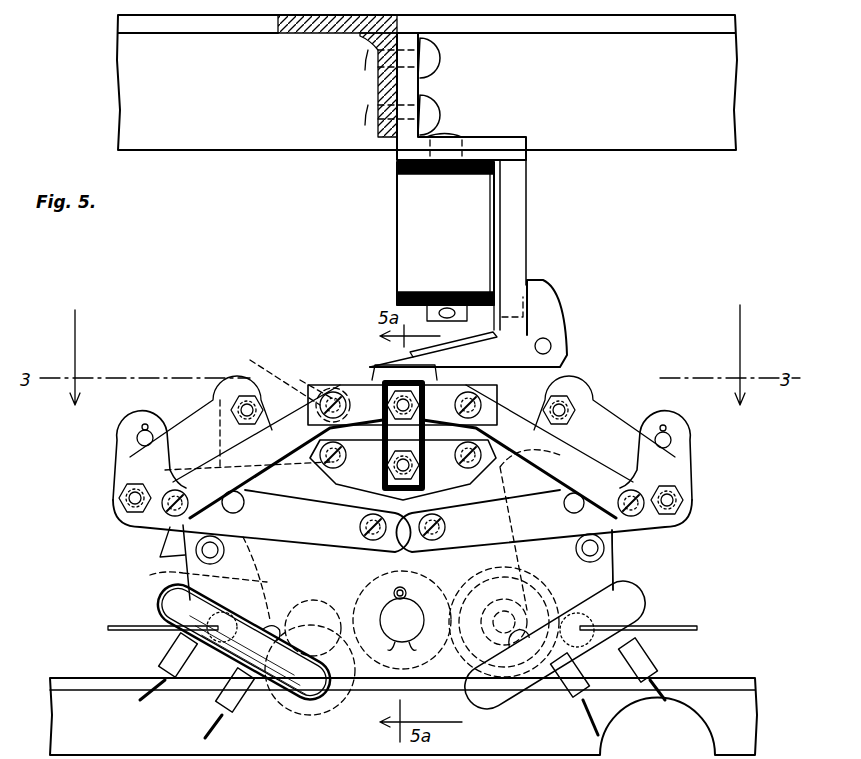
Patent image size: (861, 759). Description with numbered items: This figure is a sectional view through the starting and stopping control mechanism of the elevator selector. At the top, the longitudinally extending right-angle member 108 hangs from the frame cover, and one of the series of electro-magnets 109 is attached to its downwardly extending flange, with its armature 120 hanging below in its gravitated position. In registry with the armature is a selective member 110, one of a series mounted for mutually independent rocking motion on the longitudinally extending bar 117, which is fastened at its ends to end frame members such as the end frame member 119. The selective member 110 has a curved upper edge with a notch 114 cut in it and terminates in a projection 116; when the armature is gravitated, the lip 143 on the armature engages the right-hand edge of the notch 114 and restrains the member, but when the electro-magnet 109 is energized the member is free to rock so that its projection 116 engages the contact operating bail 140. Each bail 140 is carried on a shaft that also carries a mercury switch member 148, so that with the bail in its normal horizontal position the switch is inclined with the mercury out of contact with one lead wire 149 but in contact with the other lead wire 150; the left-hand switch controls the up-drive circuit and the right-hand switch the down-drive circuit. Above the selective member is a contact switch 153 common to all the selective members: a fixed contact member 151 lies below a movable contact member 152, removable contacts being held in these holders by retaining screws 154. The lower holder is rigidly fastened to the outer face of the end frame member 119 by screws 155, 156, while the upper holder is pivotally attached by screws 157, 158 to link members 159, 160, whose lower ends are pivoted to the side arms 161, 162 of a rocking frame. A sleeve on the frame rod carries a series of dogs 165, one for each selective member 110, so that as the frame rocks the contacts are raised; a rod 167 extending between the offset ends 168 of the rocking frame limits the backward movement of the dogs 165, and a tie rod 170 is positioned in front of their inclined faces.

The right-angle member 108 is at (378, 85).
The electro-magnet 109 is at (400, 230).
The selective member 110 is at (183, 575).
The notch 114 is at (279, 372).
The projection 116 is at (160, 555).
The bar 117 is at (385, 608).
The end frame member 119 is at (618, 572).
The armature 120 is at (468, 330).
The contact operating bail 140 is at (118, 626).
The lip 143 is at (437, 373).
The mercury switch member 148 is at (248, 700).
The lead wire 149 is at (140, 700).
The lead wire 150 is at (215, 716).
The fixed contact member 151 is at (465, 460).
The movable contact member 152 is at (490, 420).
The contact switch 153 is at (343, 395).
The retaining screw 154 is at (392, 468).
The screw 155 is at (312, 462).
The screw 156 is at (530, 530).
The screw 157 is at (325, 392).
The screw 158 is at (500, 408).
The link member 159 is at (278, 451).
The link member 160 is at (600, 440).
The side arm 161 is at (262, 518).
The side arm 162 is at (454, 525).
The dog 165 is at (190, 430).
The rod 167 is at (148, 432).
The offset end 168 is at (136, 441).
The tie rod 170 is at (243, 405).